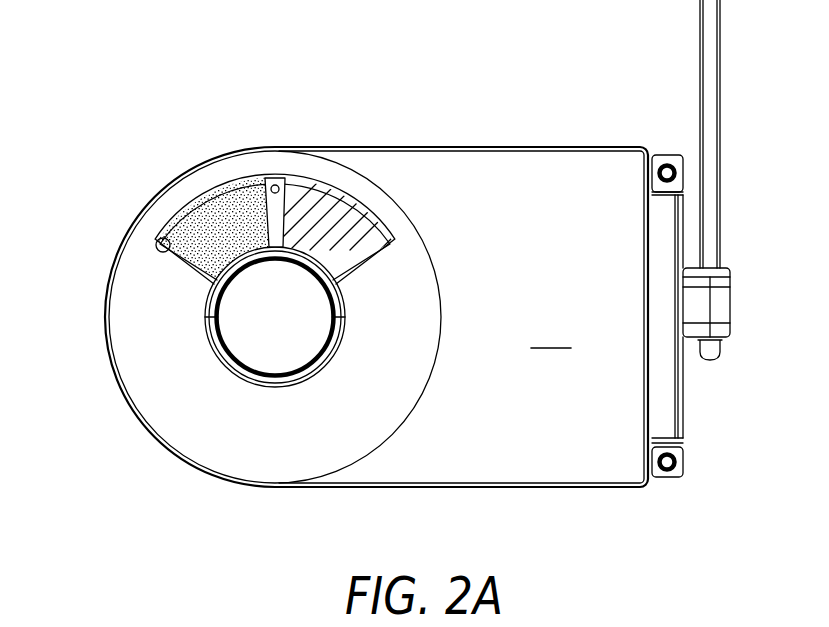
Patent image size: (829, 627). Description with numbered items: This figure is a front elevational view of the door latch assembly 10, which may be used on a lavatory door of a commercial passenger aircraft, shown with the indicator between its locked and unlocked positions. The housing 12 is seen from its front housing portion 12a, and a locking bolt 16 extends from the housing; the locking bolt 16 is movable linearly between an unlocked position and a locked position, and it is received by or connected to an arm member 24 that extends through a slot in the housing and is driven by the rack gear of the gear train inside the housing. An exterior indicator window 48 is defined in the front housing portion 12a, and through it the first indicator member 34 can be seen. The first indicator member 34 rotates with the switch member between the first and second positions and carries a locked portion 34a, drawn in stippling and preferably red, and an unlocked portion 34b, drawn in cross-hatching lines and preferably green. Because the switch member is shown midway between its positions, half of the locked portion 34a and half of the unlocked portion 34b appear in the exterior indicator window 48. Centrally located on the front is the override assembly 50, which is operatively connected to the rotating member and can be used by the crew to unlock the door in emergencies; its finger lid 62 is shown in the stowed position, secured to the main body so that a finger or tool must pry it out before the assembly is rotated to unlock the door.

The door latch assembly 10 is at (125, 117).
The housing 12 is at (543, 165).
The front housing portion 12a is at (554, 335).
The locking bolt 16 is at (722, 66).
The arm member 24 is at (722, 308).
The first indicator member 34 is at (278, 207).
The locked portion 34a is at (227, 213).
The unlocked portion 34b is at (330, 213).
The exterior indicator window 48 is at (170, 246).
The override assembly 50 is at (205, 363).
The finger lid 62 is at (275, 318).